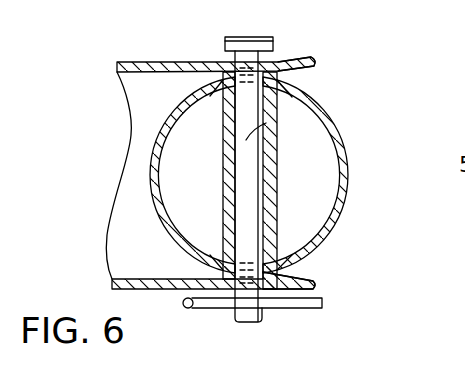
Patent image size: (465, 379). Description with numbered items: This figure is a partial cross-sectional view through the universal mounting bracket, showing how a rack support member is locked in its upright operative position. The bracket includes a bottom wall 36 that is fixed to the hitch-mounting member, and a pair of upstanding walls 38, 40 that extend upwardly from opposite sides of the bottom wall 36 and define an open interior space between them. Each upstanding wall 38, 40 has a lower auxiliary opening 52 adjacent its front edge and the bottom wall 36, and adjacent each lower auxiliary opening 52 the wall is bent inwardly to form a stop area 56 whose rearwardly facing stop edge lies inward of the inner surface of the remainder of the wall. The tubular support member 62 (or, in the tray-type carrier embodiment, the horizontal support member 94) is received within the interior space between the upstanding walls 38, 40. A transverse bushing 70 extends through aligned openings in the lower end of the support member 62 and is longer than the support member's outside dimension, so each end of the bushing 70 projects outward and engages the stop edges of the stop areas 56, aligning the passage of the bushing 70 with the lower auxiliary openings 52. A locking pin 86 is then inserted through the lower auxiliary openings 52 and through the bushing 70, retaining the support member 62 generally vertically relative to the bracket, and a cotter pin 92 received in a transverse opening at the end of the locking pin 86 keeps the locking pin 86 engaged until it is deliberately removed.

The bottom wall 36 is at (135, 116).
The upstanding wall 38 is at (148, 291).
The upstanding wall 40 is at (160, 62).
The lower auxiliary opening 52 is at (249, 65).
The stop area 56 is at (315, 70).
The support member 62 is at (295, 175).
The support member 94 is at (360, 174).
The bushing 70 is at (278, 168).
The locking pin 86 is at (265, 122).
The cotter pin 92 is at (298, 308).